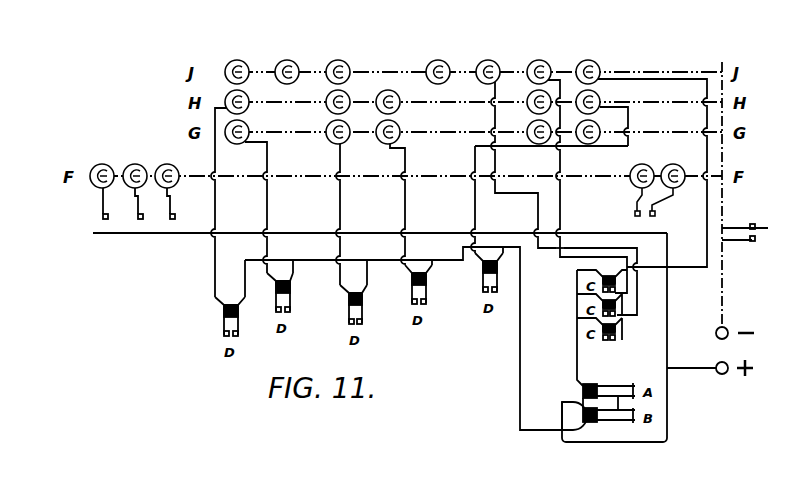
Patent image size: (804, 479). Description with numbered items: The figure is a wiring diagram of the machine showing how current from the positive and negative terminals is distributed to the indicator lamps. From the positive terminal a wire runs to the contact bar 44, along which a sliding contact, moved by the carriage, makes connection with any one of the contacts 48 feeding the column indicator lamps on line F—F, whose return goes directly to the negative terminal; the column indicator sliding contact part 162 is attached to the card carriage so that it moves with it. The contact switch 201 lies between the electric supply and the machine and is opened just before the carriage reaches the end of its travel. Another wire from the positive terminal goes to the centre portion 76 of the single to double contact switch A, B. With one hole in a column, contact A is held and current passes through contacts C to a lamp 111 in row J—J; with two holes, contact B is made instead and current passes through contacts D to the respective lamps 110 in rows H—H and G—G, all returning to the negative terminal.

The contact bar 44 is at (162, 236).
The contacts 48 is at (657, 214).
The centre portion of single to double contact switch 76 is at (570, 402).
The lamps 110 is at (382, 138).
The lamp 111 is at (342, 66).
The column indicator sliding contact part 162 is at (613, 230).
The contact switch 201 is at (757, 241).